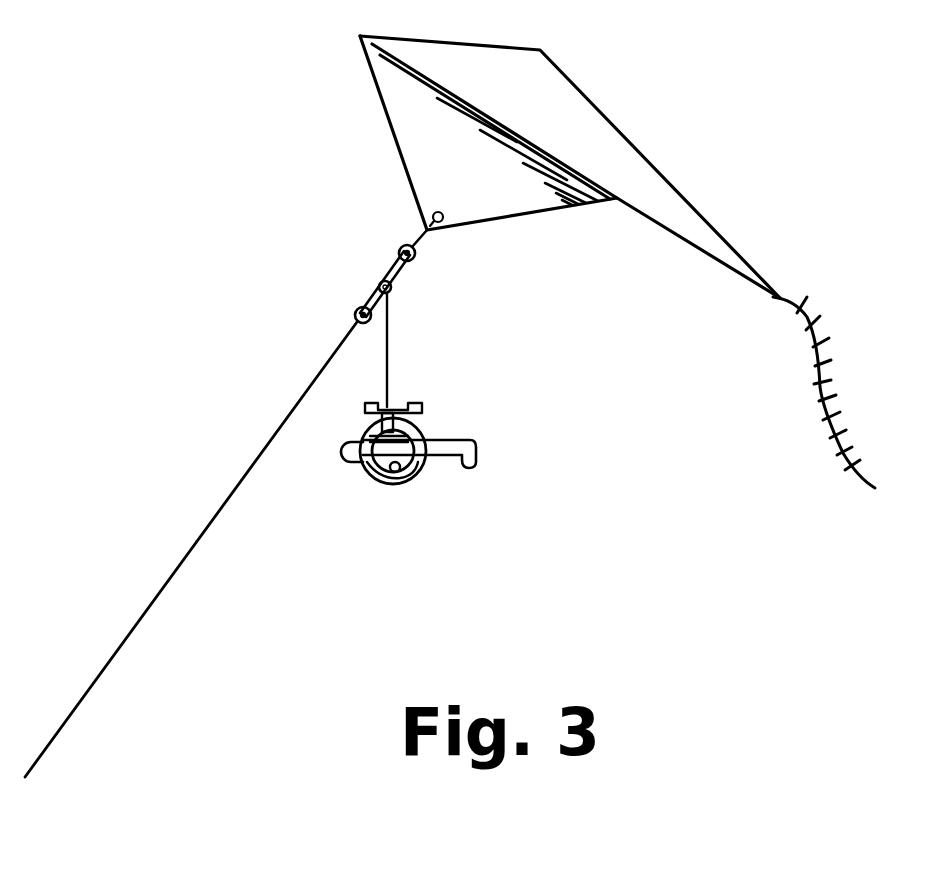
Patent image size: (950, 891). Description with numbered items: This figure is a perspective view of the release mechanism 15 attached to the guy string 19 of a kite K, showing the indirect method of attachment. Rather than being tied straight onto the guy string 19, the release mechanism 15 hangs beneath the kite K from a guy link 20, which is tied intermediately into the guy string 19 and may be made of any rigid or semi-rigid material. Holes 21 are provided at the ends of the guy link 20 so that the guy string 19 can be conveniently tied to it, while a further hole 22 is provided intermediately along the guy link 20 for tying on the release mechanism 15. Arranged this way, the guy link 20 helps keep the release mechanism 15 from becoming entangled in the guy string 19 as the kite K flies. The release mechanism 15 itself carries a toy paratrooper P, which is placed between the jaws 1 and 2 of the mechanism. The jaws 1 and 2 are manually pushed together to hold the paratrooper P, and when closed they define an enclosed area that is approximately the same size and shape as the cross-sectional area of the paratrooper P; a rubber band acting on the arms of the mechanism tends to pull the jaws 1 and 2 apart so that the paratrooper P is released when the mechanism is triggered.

The kite K is at (600, 137).
The guy link 20 is at (415, 282).
The holes 21 is at (400, 247).
The hole 22 is at (379, 282).
The guy string 19 is at (120, 650).
The release mechanism 15 is at (434, 398).
The jaw 1 is at (415, 470).
The paratrooper P is at (473, 447).
The jaw 2 is at (372, 472).